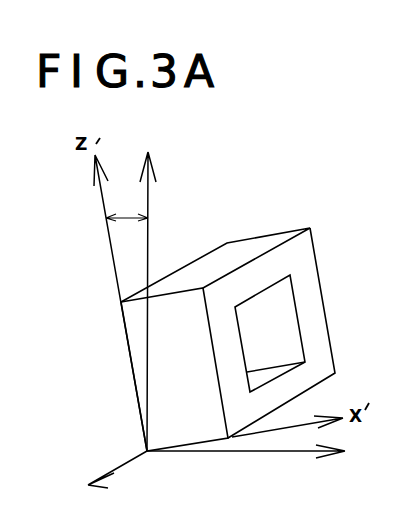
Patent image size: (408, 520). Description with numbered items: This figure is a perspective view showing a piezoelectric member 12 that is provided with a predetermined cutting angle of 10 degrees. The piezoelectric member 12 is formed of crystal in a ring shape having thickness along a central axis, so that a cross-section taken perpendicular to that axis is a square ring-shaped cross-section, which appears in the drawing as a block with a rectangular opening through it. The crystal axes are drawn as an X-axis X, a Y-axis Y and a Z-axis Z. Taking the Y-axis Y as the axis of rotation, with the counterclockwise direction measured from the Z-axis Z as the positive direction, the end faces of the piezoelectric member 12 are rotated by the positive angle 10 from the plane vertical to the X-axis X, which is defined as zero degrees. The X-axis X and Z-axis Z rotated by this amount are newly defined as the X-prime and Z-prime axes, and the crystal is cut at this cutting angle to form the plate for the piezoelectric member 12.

The piezoelectric member 12 is at (268, 200).
The 10 degree rotation angle indicator 10 is at (127, 208).
The X-axis X is at (255, 453).
The Y-axis Y is at (112, 469).
The Z-axis Z is at (148, 292).